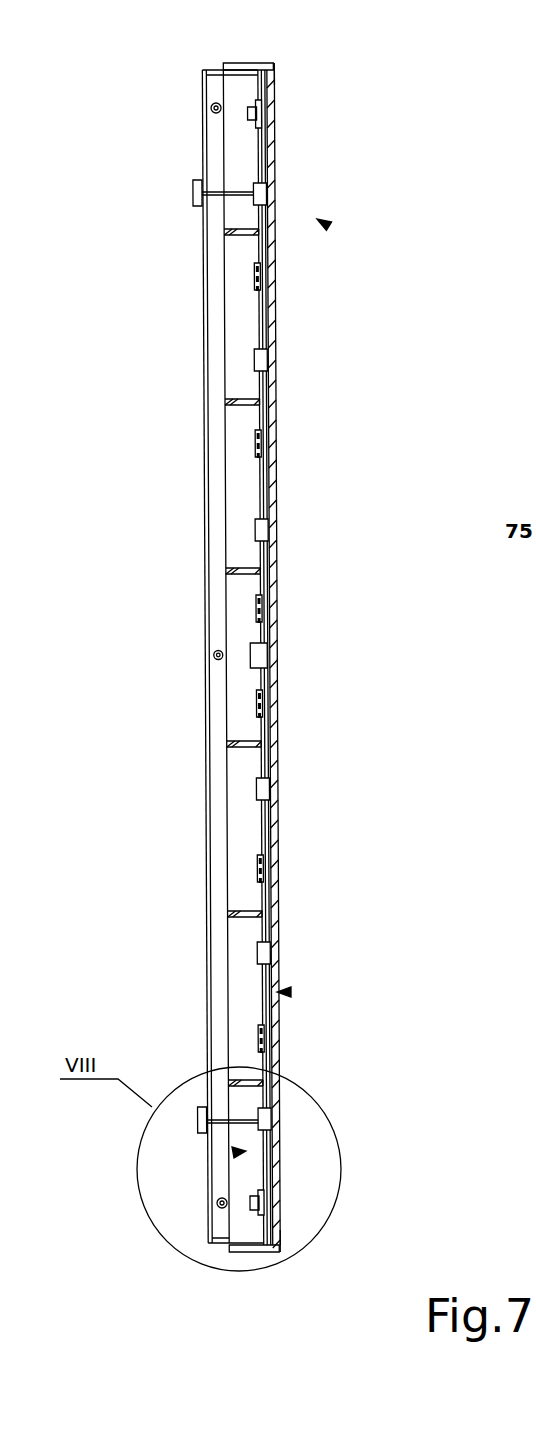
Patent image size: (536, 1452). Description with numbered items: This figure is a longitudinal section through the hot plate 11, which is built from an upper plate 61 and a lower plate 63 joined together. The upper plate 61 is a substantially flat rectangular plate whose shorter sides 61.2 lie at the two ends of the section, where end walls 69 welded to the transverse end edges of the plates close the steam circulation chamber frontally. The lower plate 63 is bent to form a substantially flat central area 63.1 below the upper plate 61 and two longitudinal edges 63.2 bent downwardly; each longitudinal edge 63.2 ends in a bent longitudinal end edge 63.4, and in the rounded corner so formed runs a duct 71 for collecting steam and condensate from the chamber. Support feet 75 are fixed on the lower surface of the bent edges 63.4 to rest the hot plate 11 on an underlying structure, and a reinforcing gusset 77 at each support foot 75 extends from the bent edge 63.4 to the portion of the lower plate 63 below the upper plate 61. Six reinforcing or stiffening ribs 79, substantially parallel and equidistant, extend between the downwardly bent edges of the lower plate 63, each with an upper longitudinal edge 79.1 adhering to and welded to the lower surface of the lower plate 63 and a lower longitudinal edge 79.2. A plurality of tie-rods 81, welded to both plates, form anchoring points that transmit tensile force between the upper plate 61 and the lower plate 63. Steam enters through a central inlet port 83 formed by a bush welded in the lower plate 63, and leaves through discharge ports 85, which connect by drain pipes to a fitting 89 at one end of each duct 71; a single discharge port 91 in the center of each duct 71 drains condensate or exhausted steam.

The hot plate 11 is at (320, 221).
The upper plate 61 is at (282, 992).
The shorter sides 61.2 is at (273, 66).
The lower plate 63 is at (240, 1153).
The substantially flat central area 63.1 is at (265, 733).
The longitudinal edges 63.2 is at (242, 548).
The bent longitudinal end edge 63.4 is at (208, 905).
The end walls 69 is at (243, 66).
The duct 71 is at (213, 142).
The support feet 75 is at (192, 192).
The reinforcing gusset 77 is at (232, 190).
The reinforcing or stiffening ribs 79 is at (222, 230).
The upper longitudinal edge 79.1 is at (268, 400).
The lower longitudinal edge 79.2 is at (226, 403).
The tie-rods 81 is at (268, 365).
The inlet port 83 is at (264, 655).
The discharge ports 85 is at (252, 117).
The fitting 89 is at (212, 105).
The discharge port 91 is at (215, 659).